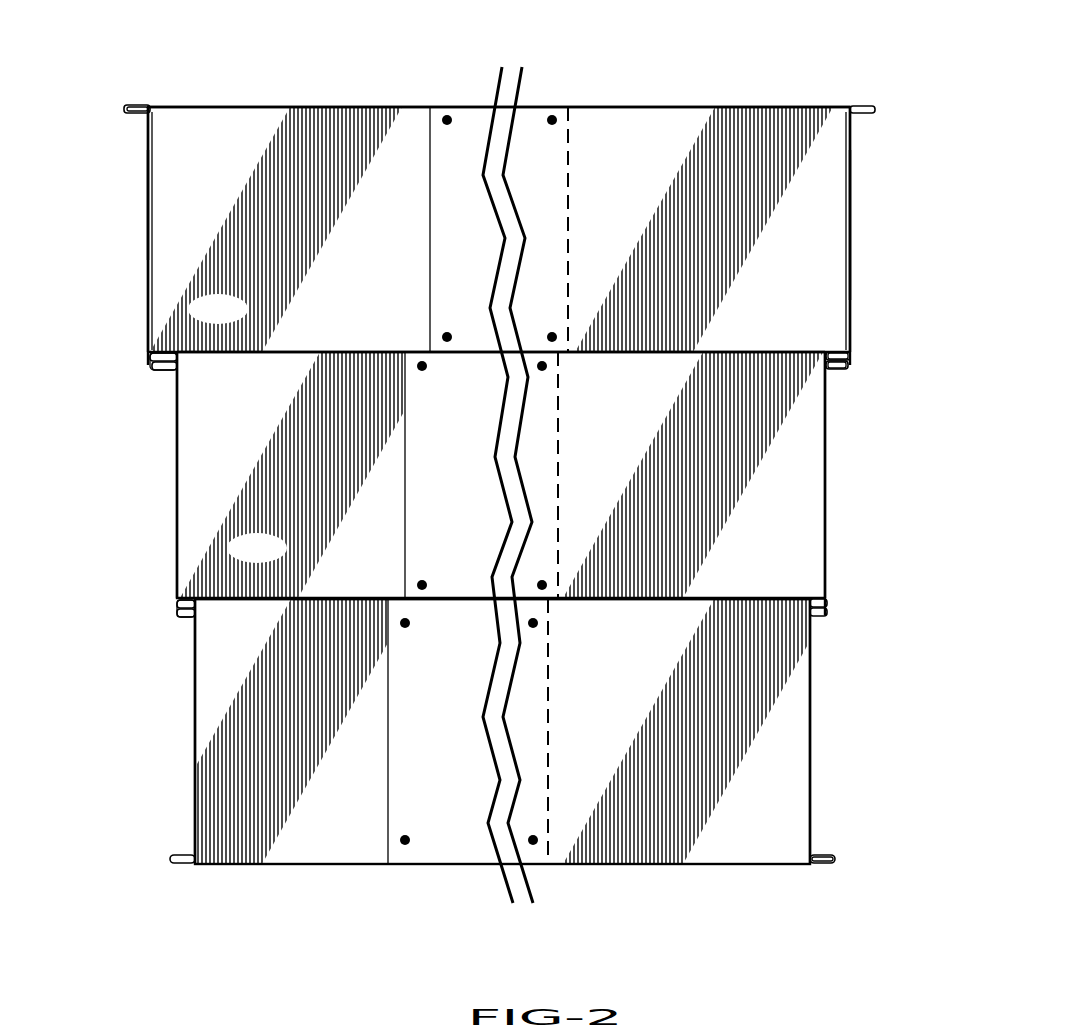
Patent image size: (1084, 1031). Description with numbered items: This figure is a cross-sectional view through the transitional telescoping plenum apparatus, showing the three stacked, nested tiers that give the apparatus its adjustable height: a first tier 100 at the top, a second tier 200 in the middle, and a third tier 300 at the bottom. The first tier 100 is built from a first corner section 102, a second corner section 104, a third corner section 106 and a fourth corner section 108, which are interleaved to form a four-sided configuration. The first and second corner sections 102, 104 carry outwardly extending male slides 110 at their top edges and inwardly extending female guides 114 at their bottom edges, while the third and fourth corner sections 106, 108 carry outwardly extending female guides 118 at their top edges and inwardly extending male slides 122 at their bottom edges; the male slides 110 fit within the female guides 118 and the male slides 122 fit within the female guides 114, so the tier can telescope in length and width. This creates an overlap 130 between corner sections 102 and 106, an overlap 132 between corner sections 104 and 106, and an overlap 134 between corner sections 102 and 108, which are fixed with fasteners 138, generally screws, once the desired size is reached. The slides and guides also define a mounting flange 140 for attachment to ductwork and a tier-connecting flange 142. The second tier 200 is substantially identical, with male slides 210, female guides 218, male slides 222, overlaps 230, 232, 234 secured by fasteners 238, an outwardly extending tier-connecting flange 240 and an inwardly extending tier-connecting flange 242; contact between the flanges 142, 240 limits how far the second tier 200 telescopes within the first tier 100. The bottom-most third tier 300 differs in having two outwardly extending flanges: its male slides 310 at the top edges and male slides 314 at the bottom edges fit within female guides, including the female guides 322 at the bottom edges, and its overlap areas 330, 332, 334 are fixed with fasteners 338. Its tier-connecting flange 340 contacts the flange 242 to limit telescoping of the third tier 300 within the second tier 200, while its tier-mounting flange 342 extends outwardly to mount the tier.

The first tier 100 is at (146, 306).
The first corner section 102 is at (148, 202).
The second corner section 104 is at (850, 217).
The third corner section 106 is at (150, 185).
The fourth corner section 108 is at (852, 187).
The male slides 110 is at (153, 106).
The female guides 114 is at (835, 370).
The female guides 118 is at (128, 108).
The male slides 122 is at (858, 357).
The overlap 130 is at (150, 136).
The overlap 132 is at (850, 258).
The overlap 134 is at (523, 117).
The fasteners 138 is at (448, 115).
The mounting flange 140 is at (141, 102).
The tier-connecting flange 142 is at (152, 374).
The second tier 200 is at (176, 547).
The male slides 210 is at (843, 353).
The female guides 218 is at (851, 346).
The male slides 222 is at (815, 612).
The overlap 230 is at (177, 425).
The overlap 232 is at (825, 503).
The overlap 234 is at (535, 437).
The fasteners 238 is at (543, 370).
The tier-connecting flange 240 is at (167, 349).
The tier-connecting flange 242 is at (181, 621).
The third tier 300 is at (192, 778).
The male slides 310 is at (815, 598).
The male slides 314 is at (815, 865).
The female guides 322 is at (816, 856).
The overlap area 330 is at (195, 676).
The overlap area 332 is at (810, 768).
The overlap area 334 is at (533, 858).
The fasteners 338 is at (533, 835).
The tier-connecting flange 340 is at (194, 597).
The tier-mounting flange 342 is at (182, 869).